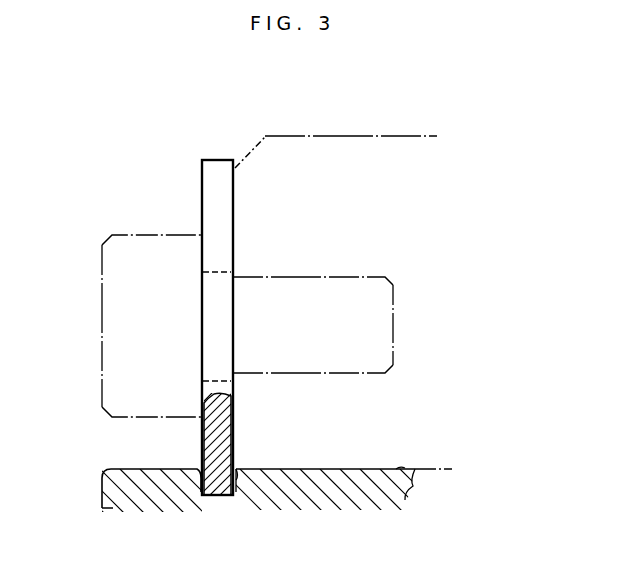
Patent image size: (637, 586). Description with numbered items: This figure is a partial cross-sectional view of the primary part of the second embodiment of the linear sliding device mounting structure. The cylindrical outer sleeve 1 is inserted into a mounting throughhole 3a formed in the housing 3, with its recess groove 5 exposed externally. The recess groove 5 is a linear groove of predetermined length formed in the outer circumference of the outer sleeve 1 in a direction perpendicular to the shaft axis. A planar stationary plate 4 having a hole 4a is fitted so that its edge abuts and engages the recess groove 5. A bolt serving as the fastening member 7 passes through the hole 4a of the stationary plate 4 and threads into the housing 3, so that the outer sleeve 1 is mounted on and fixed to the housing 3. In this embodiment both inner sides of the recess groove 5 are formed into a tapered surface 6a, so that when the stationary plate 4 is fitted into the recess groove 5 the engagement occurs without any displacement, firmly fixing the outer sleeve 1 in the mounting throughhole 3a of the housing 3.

The outer sleeve 1 is at (100, 488).
The housing 3 is at (372, 145).
The mounting throughhole 3a is at (396, 468).
The stationary plate 4 is at (205, 174).
The hole 4a is at (222, 272).
The recess groove 5 is at (220, 497).
The tapered surface 6a is at (238, 466).
The fastening member 7 is at (105, 253).